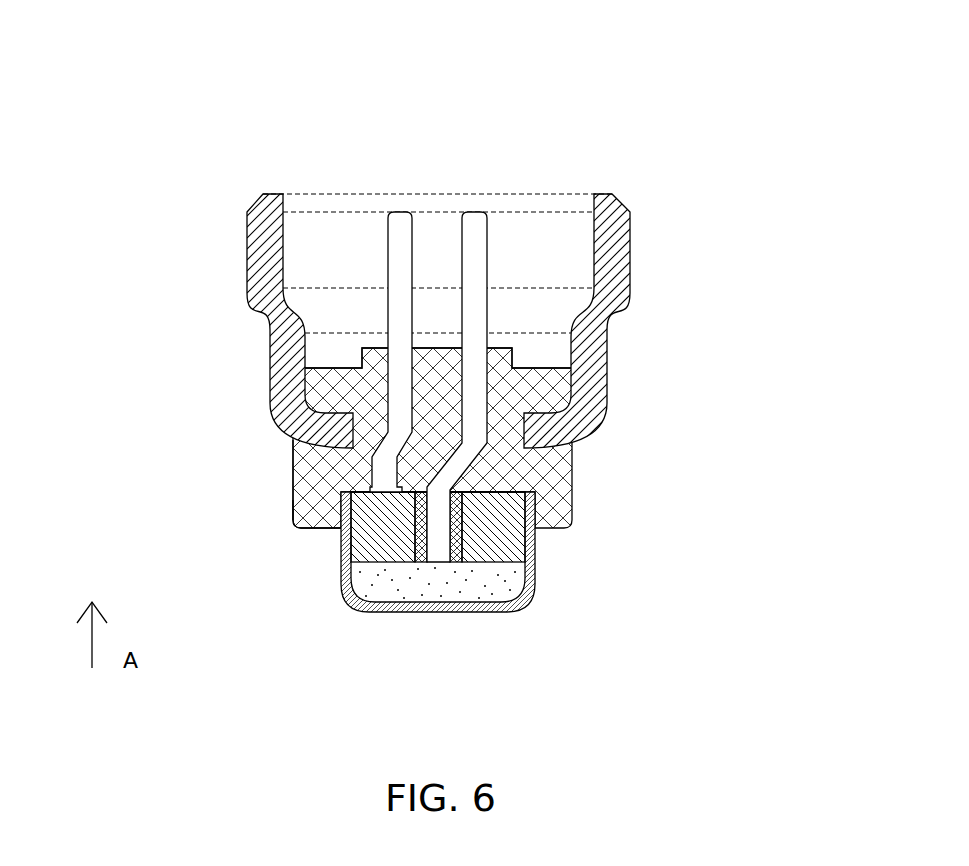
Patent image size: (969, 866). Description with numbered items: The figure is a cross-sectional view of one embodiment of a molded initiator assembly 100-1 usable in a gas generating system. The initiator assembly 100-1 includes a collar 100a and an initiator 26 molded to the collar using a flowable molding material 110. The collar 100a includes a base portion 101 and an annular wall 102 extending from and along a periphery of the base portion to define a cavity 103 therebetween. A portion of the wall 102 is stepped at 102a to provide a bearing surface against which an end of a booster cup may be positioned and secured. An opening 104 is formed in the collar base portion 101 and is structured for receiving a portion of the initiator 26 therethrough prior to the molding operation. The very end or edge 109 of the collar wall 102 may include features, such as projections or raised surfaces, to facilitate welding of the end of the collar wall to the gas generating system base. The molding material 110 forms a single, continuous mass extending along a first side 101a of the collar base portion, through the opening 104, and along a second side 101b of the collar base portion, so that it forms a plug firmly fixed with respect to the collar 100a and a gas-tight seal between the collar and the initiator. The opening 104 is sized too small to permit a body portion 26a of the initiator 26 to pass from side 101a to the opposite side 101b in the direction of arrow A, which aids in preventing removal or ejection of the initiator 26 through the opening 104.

The initiator 26 is at (477, 207).
The body portion of initiator 26a is at (390, 583).
The initiator assembly 100-1 is at (816, 323).
The collar 100a is at (593, 425).
The base portion 101 is at (553, 450).
The first side of collar base portion 101a is at (303, 447).
The second side of collar base portion 101b is at (345, 413).
The annular wall 102 is at (240, 282).
The stepped portion of wall 102a is at (610, 300).
The cavity 103 is at (335, 258).
The opening 104 is at (297, 497).
The end of collar wall 109 is at (295, 190).
The molding material 110 is at (547, 383).